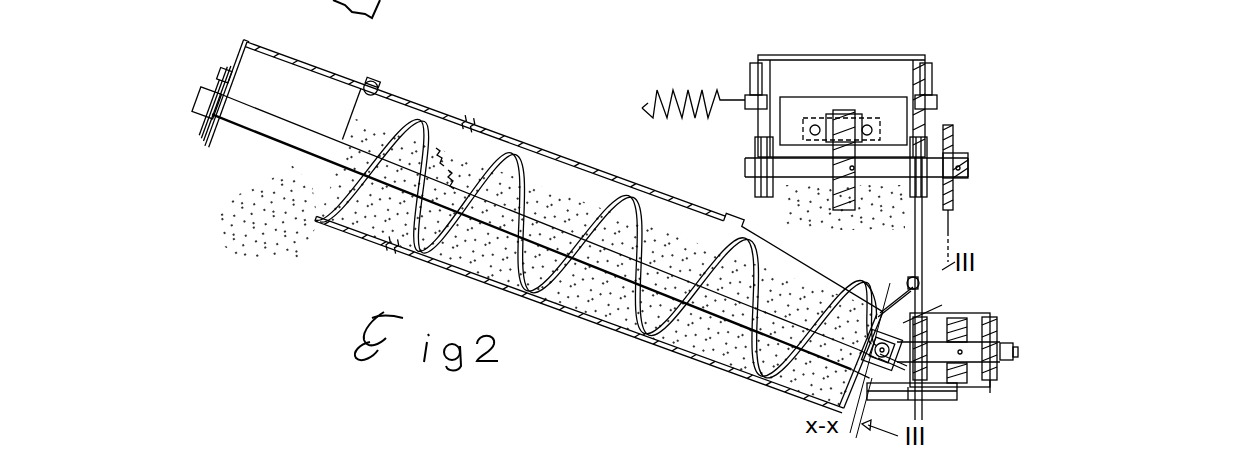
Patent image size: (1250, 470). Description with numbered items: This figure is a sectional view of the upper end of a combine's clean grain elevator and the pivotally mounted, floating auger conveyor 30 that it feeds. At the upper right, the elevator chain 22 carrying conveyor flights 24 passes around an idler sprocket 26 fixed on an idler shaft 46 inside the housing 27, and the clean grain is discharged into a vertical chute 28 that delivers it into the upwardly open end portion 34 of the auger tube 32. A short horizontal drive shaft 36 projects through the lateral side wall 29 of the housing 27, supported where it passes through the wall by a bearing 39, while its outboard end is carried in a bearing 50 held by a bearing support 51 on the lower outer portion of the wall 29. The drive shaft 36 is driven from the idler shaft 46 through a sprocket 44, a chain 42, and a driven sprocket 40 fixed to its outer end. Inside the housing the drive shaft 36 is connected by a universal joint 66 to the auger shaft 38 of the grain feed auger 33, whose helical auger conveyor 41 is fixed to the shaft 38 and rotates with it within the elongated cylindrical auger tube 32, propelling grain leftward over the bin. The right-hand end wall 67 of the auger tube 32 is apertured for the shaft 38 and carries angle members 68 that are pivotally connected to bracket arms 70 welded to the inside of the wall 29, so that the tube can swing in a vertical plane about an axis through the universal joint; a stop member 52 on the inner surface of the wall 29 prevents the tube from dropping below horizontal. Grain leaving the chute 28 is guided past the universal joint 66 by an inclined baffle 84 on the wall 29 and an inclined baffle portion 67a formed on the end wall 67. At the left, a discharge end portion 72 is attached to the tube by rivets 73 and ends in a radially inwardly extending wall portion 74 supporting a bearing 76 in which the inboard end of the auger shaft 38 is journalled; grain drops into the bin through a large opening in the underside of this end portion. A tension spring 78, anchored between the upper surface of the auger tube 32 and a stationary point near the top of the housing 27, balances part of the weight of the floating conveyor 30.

The chain 22 is at (838, 116).
The conveyor flights 24 is at (800, 97).
The idler sprocket 26 is at (857, 185).
The housing 27 is at (850, 48).
The vertical chute 28 is at (847, 240).
The lateral side wall 29 is at (950, 230).
The floating auger conveyor 30 is at (566, 145).
The auger tube 32 is at (613, 177).
The grain feed auger 33 is at (427, 149).
The upwardly open end portion 34 is at (882, 302).
The horizontal drive shaft 36 is at (973, 336).
The auger shaft 38 is at (658, 262).
The bearing 39 is at (935, 375).
The driven sprocket 40 is at (957, 388).
The helical auger conveyor 41 is at (527, 187).
The chain 42 is at (955, 218).
The sprocket 44 is at (952, 137).
The idler shaft 46 is at (803, 180).
The bearing 50 is at (997, 333).
The bearing support 51 is at (980, 390).
The stop member 52 is at (900, 432).
The universal joint 66 is at (861, 344).
The right-hand end wall 67 is at (858, 372).
The inclined baffle portion 67a is at (860, 300).
The angle members 68 is at (880, 362).
The bracket arms 70 is at (903, 323).
The discharge end portion 72 is at (266, 149).
The rivets 73 is at (382, 86).
The radially inwardly extending wall portion 74 is at (243, 55).
The bearing 76 is at (219, 92).
The tension spring 78 is at (683, 92).
The inclined baffle 84 is at (918, 283).